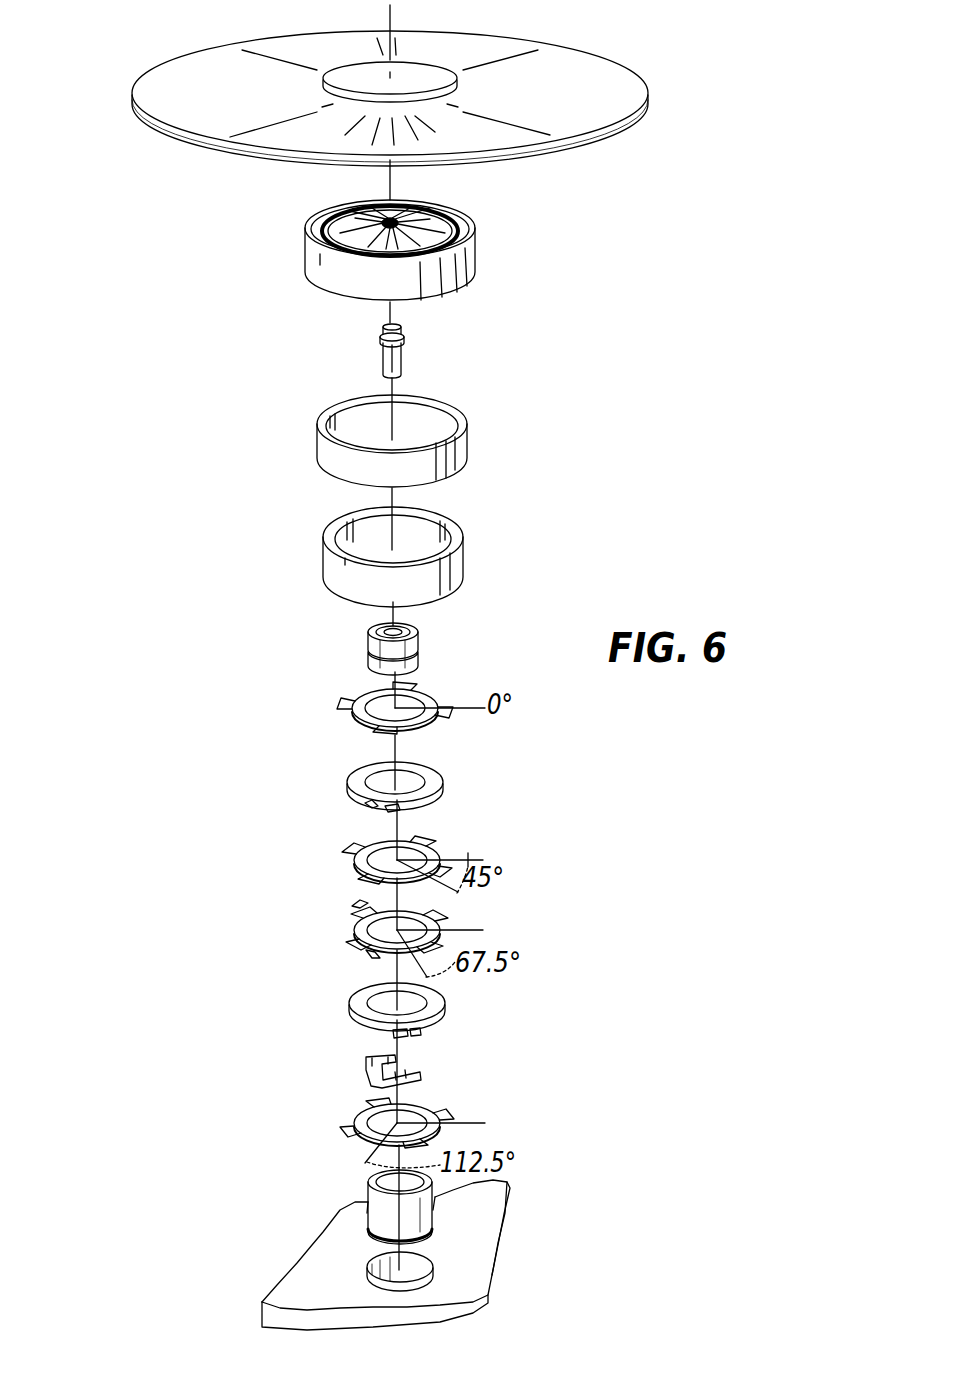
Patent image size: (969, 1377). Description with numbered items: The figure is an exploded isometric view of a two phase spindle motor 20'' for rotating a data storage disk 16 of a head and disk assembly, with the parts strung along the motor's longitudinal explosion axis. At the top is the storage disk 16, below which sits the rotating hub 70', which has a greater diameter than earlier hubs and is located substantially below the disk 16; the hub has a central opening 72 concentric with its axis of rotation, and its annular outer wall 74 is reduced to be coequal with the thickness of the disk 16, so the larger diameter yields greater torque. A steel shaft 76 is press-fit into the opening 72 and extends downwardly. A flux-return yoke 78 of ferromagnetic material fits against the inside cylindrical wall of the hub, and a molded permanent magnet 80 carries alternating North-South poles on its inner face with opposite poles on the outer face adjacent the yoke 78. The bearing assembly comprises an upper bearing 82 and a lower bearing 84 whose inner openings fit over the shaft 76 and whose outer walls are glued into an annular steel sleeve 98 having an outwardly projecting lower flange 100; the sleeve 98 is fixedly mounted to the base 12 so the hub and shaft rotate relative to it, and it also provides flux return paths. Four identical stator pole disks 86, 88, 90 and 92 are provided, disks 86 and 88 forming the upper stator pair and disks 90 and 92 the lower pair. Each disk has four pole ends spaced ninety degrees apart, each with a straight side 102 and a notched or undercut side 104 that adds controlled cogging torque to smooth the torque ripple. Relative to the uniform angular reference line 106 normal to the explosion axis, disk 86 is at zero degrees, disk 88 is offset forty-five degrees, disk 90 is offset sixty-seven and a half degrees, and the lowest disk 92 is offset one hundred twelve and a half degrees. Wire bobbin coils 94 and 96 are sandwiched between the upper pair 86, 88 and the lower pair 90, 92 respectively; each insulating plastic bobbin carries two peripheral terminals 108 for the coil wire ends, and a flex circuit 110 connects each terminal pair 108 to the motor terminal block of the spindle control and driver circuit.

The storage disk 16 is at (588, 60).
The opening 72 is at (418, 208).
The outer cylindrical wall 74 is at (466, 228).
The hub 70' is at (350, 250).
The steel shaft 76 is at (382, 336).
The flux-return yoke 78 is at (320, 426).
The permanent magnet 80 is at (327, 540).
The upper bearing 82 is at (378, 634).
The lower bearing 84 is at (378, 660).
The stator pole disk 86 is at (340, 706).
The coil 94 is at (350, 782).
The stator pole disk 88 is at (340, 858).
The straight side 102 is at (370, 908).
The stator pole disk 90 is at (340, 928).
The notched or undercut side 104 is at (378, 958).
The coil 96 is at (350, 1000).
The peripheral terminals 108 is at (425, 1037).
The flex circuit 110 is at (364, 1058).
The stator pole disk 92 is at (340, 1118).
The annular steel sleeve 98 is at (366, 1176).
The lower flange 100 is at (505, 1188).
The base 12 is at (473, 1267).
The angular reference line 106 is at (477, 709).
The two phase spindle motor 20'' is at (105, 926).